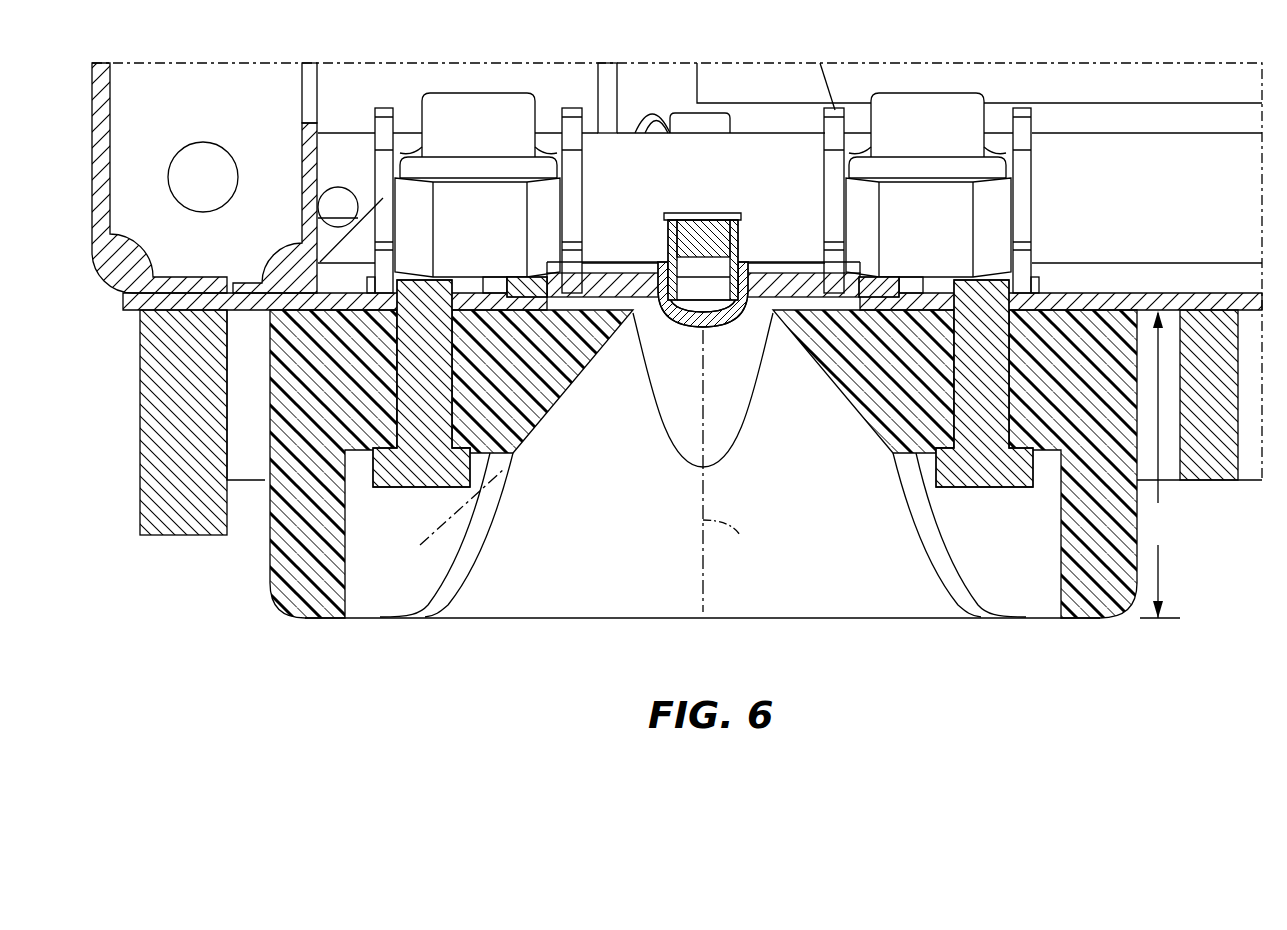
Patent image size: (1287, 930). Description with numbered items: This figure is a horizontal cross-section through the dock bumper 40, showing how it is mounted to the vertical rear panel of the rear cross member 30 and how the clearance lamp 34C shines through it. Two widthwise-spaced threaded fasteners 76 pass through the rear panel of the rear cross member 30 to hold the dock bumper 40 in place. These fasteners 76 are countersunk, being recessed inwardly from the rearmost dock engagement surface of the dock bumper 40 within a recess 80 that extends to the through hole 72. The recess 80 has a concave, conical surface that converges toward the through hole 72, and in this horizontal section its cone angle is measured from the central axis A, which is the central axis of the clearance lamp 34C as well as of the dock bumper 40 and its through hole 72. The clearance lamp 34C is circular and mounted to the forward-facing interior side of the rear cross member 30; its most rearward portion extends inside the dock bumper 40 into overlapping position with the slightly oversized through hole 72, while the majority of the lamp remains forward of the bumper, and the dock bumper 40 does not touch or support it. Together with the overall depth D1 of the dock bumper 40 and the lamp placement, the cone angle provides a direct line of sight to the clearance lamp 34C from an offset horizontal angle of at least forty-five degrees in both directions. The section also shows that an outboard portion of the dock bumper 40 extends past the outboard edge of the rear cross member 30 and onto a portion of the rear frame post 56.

The clearance lamp 34C is at (757, 220).
The through hole 72 is at (660, 300).
The rear cross member 30 is at (1111, 300).
The rear frame post 56 is at (125, 301).
The dock bumper 40 is at (290, 582).
The fasteners 76 is at (407, 477).
The recess 80 is at (510, 580).
The central axis A is at (730, 471).
The overall depth D1 is at (1160, 464).